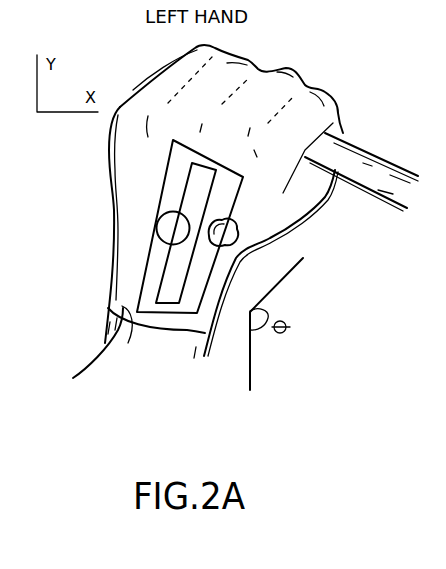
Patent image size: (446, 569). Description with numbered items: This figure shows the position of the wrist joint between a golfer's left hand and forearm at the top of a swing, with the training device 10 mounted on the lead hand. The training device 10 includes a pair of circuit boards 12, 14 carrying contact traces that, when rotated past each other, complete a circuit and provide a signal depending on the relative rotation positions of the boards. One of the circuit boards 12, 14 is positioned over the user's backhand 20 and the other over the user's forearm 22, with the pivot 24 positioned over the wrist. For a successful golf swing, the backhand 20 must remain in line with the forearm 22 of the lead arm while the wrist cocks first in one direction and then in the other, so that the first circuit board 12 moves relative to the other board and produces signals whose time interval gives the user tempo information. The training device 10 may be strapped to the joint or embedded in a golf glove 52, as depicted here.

The training device 10 is at (93, 272).
The first circuit board 12 is at (187, 193).
The circuit board 14 is at (165, 277).
The backhand 20 is at (222, 232).
The forearm 22 is at (200, 334).
The pivot 24 is at (172, 232).
The golf glove 52 is at (85, 369).